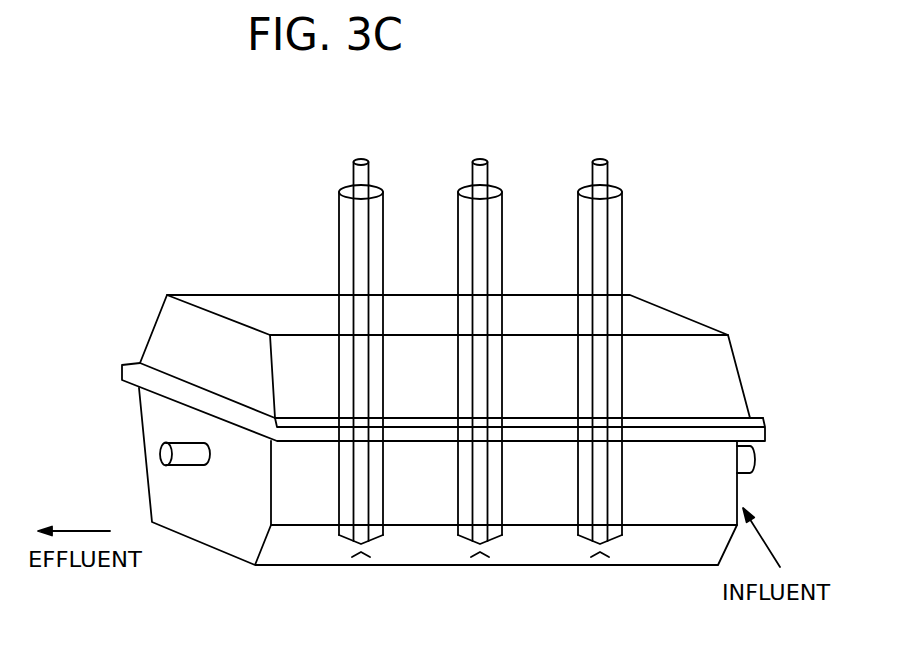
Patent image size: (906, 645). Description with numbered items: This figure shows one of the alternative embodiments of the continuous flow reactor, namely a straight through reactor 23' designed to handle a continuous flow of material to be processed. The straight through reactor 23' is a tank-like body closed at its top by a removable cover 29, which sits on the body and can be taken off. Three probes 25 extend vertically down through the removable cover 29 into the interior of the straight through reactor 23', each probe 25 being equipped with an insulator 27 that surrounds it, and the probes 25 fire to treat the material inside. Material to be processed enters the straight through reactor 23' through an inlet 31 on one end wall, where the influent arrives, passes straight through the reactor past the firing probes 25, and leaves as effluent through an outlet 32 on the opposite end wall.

The straight through reactor 23' is at (438, 516).
The probe 25 is at (608, 178).
The insulator 27 is at (622, 252).
The removable cover 29 is at (757, 418).
The inlet 31 is at (757, 460).
The outlet 32 is at (157, 443).